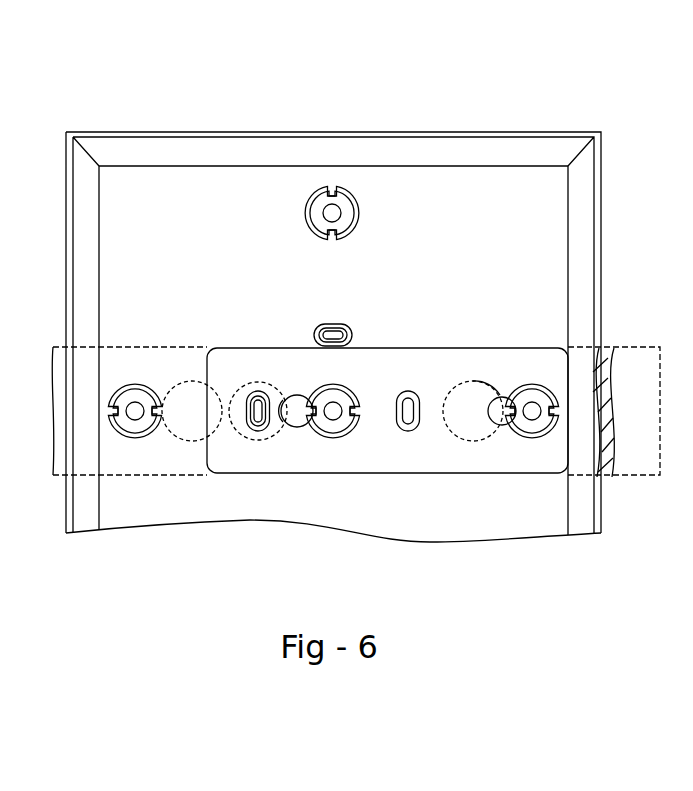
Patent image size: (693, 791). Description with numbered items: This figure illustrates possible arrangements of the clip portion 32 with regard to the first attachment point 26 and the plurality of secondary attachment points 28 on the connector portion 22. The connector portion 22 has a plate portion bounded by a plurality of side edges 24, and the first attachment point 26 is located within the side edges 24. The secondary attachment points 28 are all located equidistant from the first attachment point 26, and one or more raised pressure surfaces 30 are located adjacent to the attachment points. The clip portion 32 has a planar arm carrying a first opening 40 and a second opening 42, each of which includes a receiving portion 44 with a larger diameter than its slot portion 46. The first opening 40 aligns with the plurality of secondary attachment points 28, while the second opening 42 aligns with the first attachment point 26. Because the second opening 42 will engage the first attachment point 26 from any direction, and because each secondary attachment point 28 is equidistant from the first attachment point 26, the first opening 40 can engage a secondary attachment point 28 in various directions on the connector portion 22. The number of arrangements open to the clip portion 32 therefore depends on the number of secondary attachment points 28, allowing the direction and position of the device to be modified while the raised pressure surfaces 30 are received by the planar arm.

The connector portion 22 is at (185, 192).
The side edges 24 is at (415, 165).
The first attachment point 26 is at (333, 433).
The secondary attachment points 28 is at (322, 203).
The raised pressure surfaces 30 is at (356, 335).
The clip portion 32 is at (627, 347).
The first opening 40 is at (500, 397).
The second opening 42 is at (288, 414).
The receiving portion 44 is at (268, 390).
The slot portion 46 is at (300, 396).